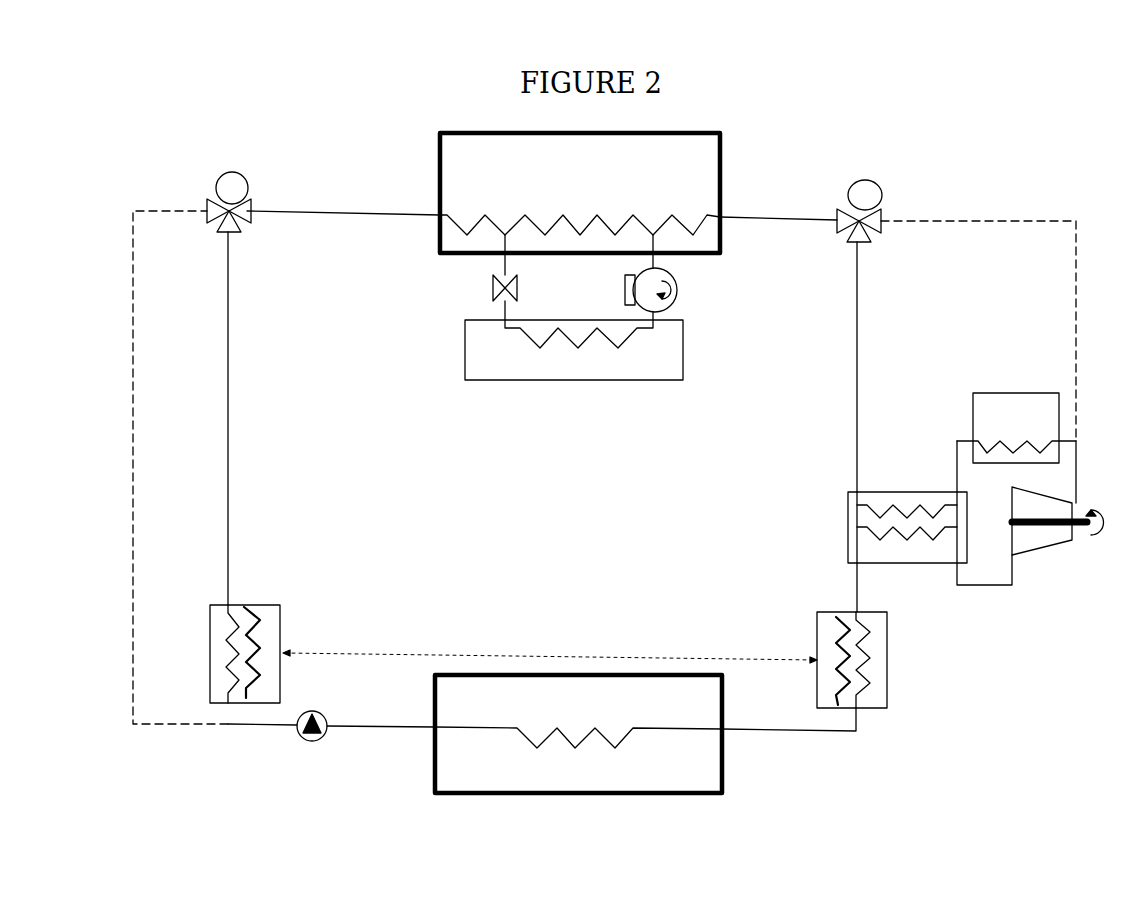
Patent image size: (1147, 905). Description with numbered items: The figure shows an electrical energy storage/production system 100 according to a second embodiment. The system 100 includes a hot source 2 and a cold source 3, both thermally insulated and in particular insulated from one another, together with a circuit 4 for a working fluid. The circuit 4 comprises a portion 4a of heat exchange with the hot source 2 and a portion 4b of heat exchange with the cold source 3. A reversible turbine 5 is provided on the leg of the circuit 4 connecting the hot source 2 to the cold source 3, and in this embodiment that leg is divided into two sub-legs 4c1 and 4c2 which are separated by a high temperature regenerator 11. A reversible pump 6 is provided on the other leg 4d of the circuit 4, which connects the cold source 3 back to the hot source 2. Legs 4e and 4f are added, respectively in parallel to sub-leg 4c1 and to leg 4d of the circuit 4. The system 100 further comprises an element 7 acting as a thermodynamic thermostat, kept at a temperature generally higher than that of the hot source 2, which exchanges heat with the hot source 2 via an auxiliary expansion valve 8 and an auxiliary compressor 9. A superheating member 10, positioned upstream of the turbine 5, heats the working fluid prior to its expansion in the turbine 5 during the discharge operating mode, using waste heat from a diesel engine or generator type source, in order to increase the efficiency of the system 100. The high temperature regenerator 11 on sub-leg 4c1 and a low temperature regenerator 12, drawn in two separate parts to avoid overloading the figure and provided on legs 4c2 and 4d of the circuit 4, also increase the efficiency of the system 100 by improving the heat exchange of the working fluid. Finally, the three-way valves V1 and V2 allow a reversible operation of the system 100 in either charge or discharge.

The system 100 is at (831, 135).
The hot source 2 is at (722, 170).
The cold source 3 is at (720, 698).
The circuit 4 is at (807, 215).
The portion of heat exchange with the hot source 4a is at (717, 256).
The portion of heat exchange with the cold source 4b is at (672, 730).
The sub-leg 4c1 is at (858, 356).
The sub-leg 4c2 is at (858, 593).
The leg 4d is at (230, 478).
The leg 4e is at (1014, 219).
The leg 4f is at (133, 460).
The reversible turbine 5 is at (1070, 532).
The reversible pump 6 is at (322, 712).
The element acting as a thermodynamic thermostat 7 is at (683, 363).
The auxiliary expansion valve 8 is at (492, 290).
The auxiliary compressor 9 is at (677, 298).
The superheating member 10 is at (1020, 393).
The high temperature regenerator 11 is at (905, 492).
The low temperature regenerator 12 is at (888, 670).
The three-way valve V1 is at (243, 178).
The three-way valve V2 is at (864, 181).